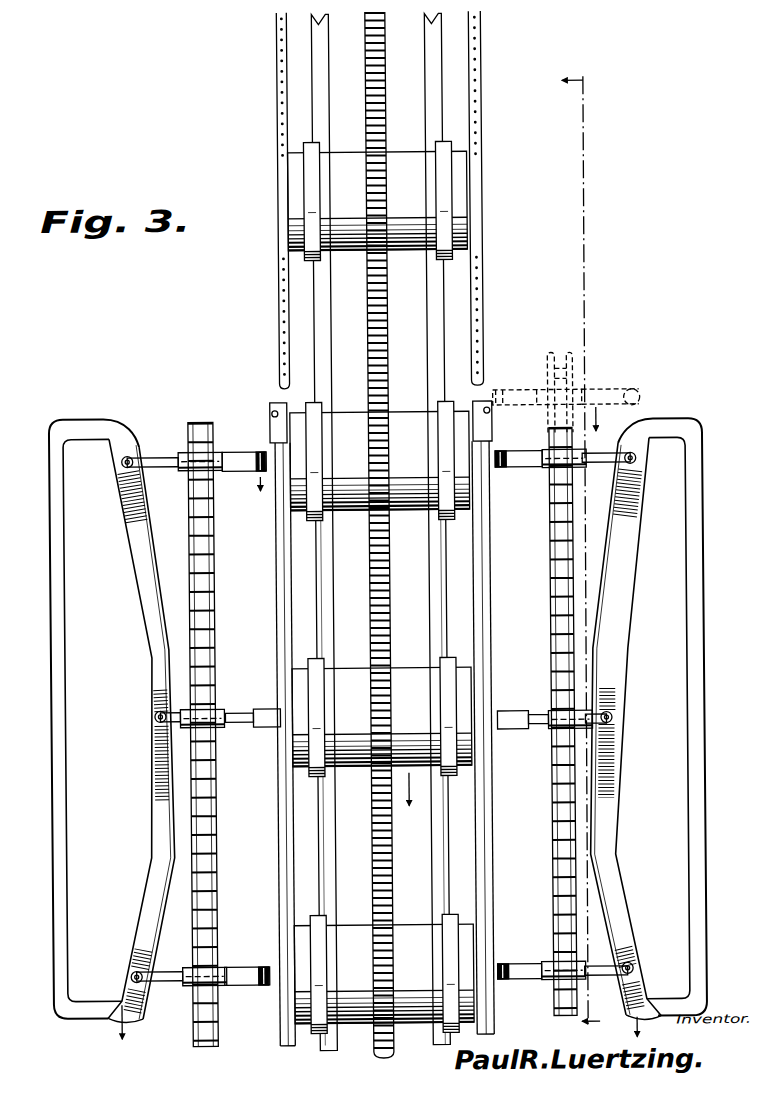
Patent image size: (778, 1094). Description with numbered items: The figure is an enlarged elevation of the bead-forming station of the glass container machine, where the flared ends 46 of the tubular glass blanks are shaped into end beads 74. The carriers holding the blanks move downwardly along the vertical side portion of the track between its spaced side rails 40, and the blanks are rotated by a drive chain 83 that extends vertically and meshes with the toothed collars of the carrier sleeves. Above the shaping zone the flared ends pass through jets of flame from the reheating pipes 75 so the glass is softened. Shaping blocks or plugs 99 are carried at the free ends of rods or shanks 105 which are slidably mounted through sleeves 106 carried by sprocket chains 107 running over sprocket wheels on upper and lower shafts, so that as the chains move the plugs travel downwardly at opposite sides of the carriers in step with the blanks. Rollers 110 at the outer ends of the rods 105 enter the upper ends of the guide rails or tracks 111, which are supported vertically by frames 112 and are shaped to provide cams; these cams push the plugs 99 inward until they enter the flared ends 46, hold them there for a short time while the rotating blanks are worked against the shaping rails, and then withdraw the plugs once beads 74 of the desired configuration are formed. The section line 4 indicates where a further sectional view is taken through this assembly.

The section line 4- 4 is at (581, 551).
The side rails 40 is at (329, 1051).
The flared ends 46 is at (285, 193).
The beads 74 is at (486, 713).
The pipes 75 is at (285, 140).
The drive chain 83 is at (371, 1056).
The shaping blocks or plugs 99 is at (246, 469).
The rods or shanks 105 is at (158, 456).
The sleeves 106 is at (214, 452).
The sprocket chains 107 is at (188, 664).
The rollers 110 is at (121, 480).
The guide rails or tracks 111 is at (133, 541).
The frames 112 is at (57, 567).